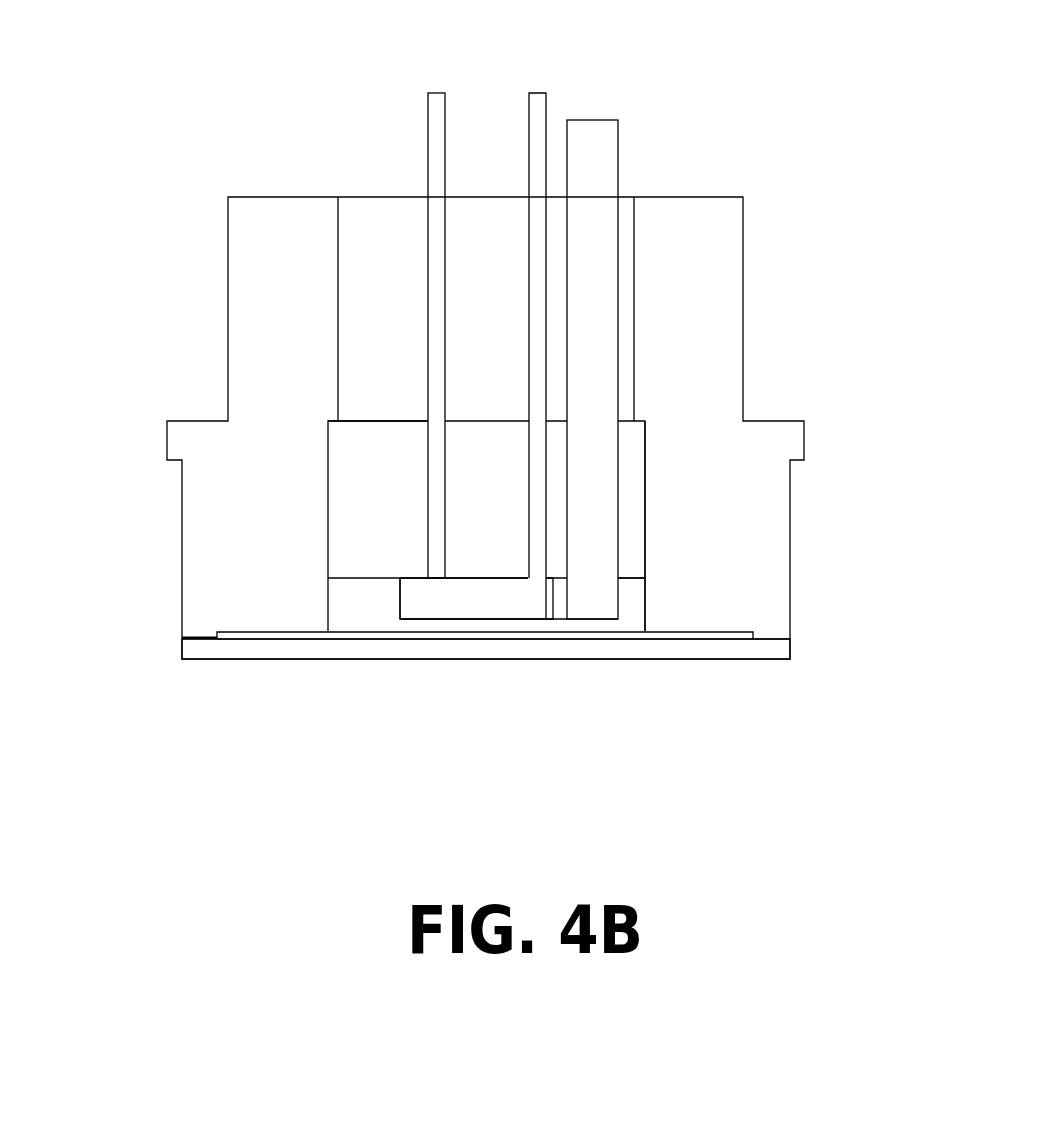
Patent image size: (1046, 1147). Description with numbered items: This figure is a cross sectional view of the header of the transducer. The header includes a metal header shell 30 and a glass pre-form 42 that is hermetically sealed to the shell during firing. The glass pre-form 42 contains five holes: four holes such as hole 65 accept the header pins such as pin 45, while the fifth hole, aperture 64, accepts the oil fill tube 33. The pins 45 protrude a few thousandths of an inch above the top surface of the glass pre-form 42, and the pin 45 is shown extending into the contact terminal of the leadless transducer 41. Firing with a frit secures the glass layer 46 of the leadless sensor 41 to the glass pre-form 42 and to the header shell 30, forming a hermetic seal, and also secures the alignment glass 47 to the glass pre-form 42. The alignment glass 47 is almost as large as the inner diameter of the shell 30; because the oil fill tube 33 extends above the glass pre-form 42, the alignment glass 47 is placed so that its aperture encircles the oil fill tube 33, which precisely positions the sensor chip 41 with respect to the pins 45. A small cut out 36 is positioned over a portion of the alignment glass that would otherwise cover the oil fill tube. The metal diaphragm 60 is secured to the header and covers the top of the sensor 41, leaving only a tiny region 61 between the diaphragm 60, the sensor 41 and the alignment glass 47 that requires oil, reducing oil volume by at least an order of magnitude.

The header shell 30 is at (792, 462).
The oil fill tube 33 is at (613, 117).
The small cut out 36 is at (630, 640).
The leadless transducer 41 is at (542, 598).
The glass pre-form 42 is at (327, 453).
The pin 45 is at (428, 117).
The glass layer 46 is at (427, 597).
The alignment glass 47 is at (407, 623).
The metal diaphragm 60 is at (258, 648).
The region requiring oil 61 is at (732, 637).
The aperture 64 is at (628, 472).
The hole 65 is at (417, 420).